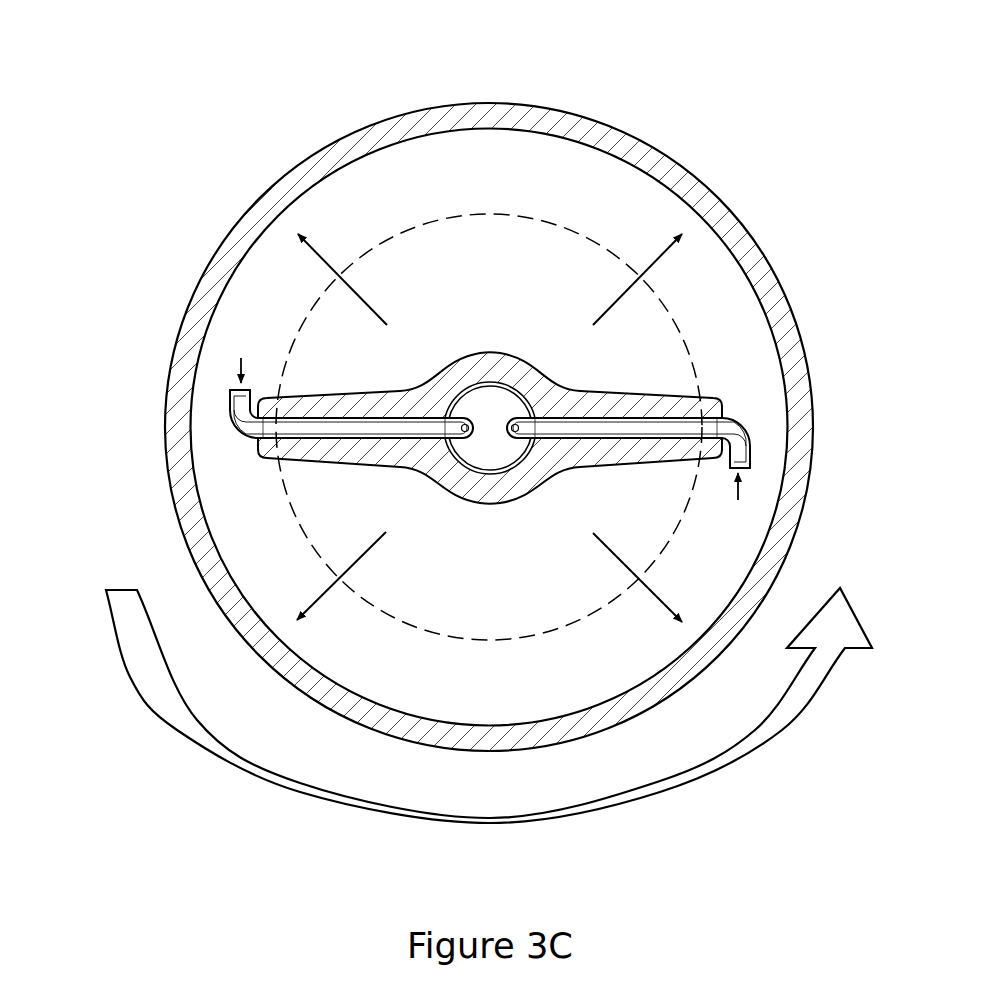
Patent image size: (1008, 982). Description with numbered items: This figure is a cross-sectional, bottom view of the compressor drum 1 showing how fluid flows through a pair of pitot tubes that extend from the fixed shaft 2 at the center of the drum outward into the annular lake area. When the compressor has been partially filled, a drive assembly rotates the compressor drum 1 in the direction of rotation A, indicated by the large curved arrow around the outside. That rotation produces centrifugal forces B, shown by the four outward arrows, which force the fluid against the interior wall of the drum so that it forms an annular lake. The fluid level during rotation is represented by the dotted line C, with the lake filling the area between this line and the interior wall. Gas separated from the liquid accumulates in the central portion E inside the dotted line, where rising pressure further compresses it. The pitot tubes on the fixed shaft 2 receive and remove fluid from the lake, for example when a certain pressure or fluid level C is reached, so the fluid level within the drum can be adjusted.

The compressor drum 1 is at (228, 232).
The fixed shaft 2 is at (470, 383).
The direction of rotation A is at (130, 678).
The centrifugal forces B is at (323, 597).
The fluid level C is at (288, 354).
The central portion E is at (492, 248).